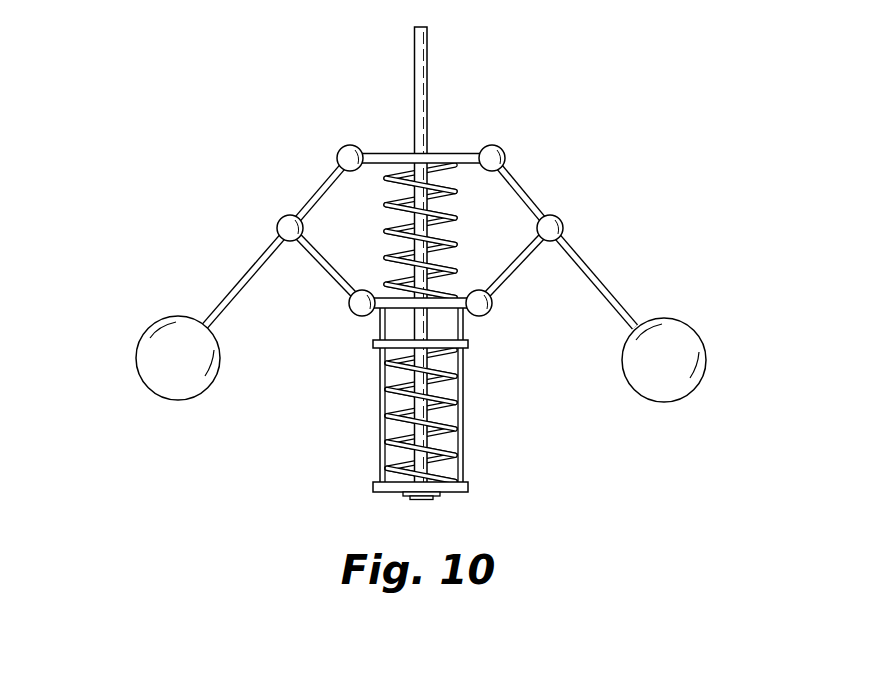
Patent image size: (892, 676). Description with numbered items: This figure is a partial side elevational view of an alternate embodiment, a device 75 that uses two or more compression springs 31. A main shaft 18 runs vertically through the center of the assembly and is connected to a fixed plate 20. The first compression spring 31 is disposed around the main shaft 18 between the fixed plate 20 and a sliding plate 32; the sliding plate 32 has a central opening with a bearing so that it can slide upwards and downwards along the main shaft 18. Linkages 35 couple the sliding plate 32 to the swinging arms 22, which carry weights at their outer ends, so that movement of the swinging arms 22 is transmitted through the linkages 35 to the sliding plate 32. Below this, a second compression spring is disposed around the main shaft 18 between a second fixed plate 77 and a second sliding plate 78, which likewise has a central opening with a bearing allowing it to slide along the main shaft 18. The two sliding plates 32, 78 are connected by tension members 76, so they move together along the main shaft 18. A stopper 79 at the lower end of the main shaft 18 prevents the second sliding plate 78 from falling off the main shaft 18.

The main shaft 18 is at (427, 50).
The fixed plate 20 is at (448, 155).
The swinging arms 22 is at (255, 270).
The compression springs 31 is at (386, 200).
The sliding plate 32 is at (393, 310).
The linkages 35 is at (323, 273).
The device 75 is at (631, 78).
The tension members 76 is at (463, 415).
The second fixed plate 77 is at (467, 348).
The second sliding plate 78 is at (463, 478).
The stopper 79 is at (434, 498).